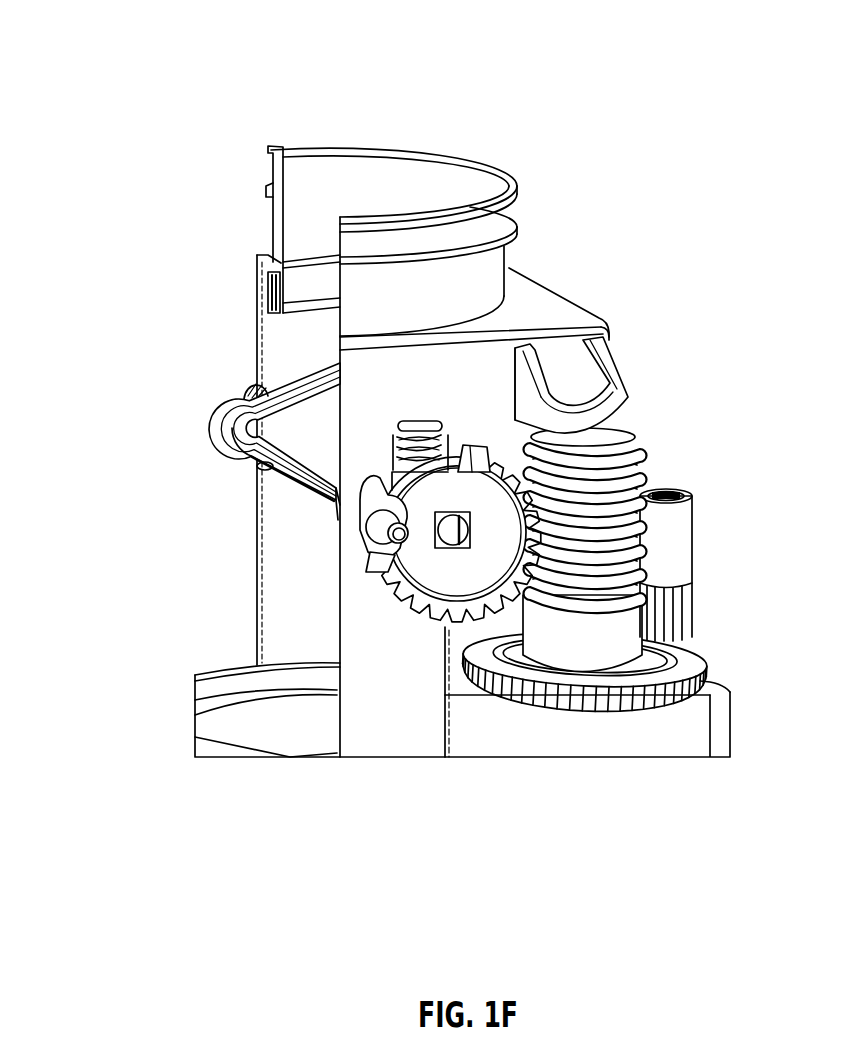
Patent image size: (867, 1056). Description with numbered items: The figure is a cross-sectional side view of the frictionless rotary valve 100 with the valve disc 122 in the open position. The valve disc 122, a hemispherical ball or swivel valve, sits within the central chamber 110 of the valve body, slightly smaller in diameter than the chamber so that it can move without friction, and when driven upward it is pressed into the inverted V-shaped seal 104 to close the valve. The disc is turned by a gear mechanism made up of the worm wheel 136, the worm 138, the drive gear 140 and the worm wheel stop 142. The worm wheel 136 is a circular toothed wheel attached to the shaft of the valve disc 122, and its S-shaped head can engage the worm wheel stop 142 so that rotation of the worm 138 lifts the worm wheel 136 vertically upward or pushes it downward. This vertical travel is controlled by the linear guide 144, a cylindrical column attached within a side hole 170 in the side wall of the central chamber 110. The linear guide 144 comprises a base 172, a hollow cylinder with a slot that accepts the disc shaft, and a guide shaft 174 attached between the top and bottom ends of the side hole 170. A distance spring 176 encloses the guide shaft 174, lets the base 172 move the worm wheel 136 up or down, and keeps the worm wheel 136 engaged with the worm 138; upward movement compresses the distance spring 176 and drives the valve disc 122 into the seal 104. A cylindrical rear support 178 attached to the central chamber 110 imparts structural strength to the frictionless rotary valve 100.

The frictionless rotary valve 100 is at (221, 56).
The seal 104 is at (273, 297).
The central chamber 110 is at (275, 578).
The valve disc 122 is at (222, 428).
The worm wheel 136 is at (472, 588).
The worm 138 is at (615, 635).
The drive gear 140 is at (673, 670).
The worm wheel stop 142 is at (362, 513).
The linear guide 144 is at (386, 438).
The side hole 170 is at (416, 422).
The base 172 is at (253, 452).
The guide shaft 174 is at (240, 400).
The distance spring 176 is at (443, 425).
The rear support 178 is at (675, 538).